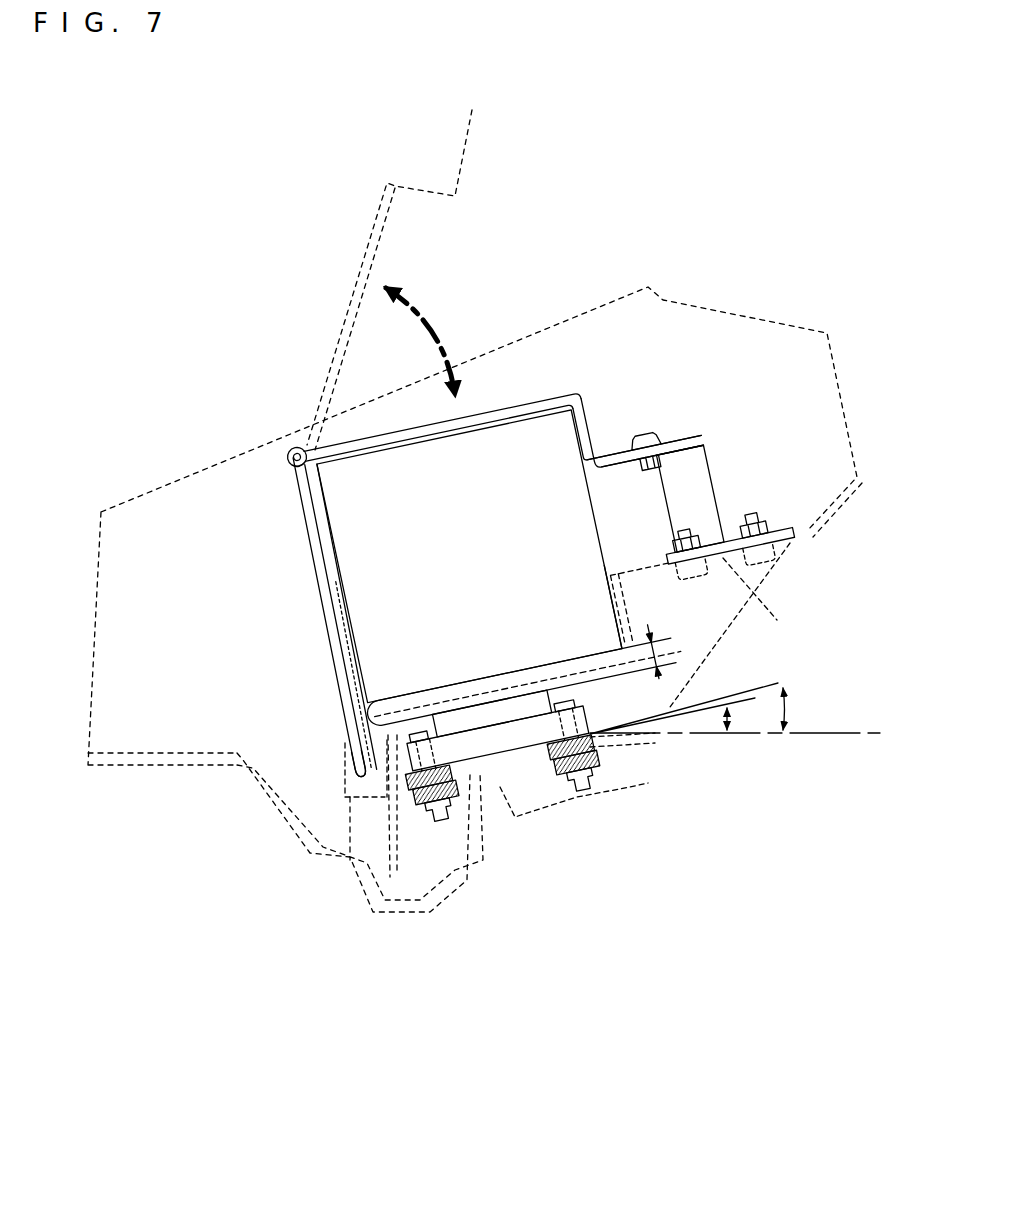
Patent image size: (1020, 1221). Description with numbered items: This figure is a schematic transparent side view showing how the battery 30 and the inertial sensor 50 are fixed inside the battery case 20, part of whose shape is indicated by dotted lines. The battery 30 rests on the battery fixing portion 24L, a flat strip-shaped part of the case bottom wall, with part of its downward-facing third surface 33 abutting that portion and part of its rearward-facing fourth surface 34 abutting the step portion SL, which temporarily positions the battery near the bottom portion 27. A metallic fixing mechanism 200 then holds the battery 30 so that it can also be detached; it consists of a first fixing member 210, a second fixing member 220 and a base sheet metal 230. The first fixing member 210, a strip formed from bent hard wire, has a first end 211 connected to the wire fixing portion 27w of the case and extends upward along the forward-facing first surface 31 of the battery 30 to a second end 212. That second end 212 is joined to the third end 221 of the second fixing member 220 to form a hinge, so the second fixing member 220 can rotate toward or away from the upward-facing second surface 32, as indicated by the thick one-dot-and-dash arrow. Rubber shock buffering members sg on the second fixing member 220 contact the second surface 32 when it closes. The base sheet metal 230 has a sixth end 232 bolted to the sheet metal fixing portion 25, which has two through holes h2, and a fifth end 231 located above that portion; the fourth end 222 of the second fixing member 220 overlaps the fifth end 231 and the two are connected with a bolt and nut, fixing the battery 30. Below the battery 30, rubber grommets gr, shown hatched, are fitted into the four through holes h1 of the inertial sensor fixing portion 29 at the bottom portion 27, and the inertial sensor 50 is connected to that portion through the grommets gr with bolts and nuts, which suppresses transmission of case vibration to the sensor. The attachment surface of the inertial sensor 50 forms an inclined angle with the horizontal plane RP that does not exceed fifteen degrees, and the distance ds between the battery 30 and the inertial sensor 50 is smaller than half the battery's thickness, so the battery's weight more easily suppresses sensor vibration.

The battery case 20 is at (185, 475).
The fixing mechanism 200 is at (276, 457).
The first fixing member 210 is at (325, 610).
The first end 211 is at (360, 773).
The second end 212 is at (287, 464).
The second fixing member 220 is at (531, 400).
The third end 221 is at (292, 446).
The fourth end 222 is at (667, 447).
The base sheet metal 230 is at (761, 503).
The fifth end 231 is at (698, 448).
The sixth end 232 is at (796, 533).
The battery fixing portion 24L is at (483, 666).
The sheet metal fixing portion 25 is at (709, 625).
The bottom portion 27 is at (570, 823).
The wire fixing portion 27w is at (345, 762).
The inertial sensor fixing portion 29 is at (514, 810).
The battery 30 is at (463, 538).
The first surface 31 is at (325, 528).
The second surface 32 is at (510, 407).
The third surface 33 is at (358, 722).
The fourth surface 34 is at (610, 564).
The inertial sensor 50 is at (497, 712).
The through holes h1 is at (422, 822).
The through holes h2 is at (758, 524).
The grommets gr is at (412, 805).
The distance ds is at (670, 640).
The shock buffering members sg is at (408, 430).
The step portion SL is at (597, 617).
The horizontal plane RP is at (862, 733).